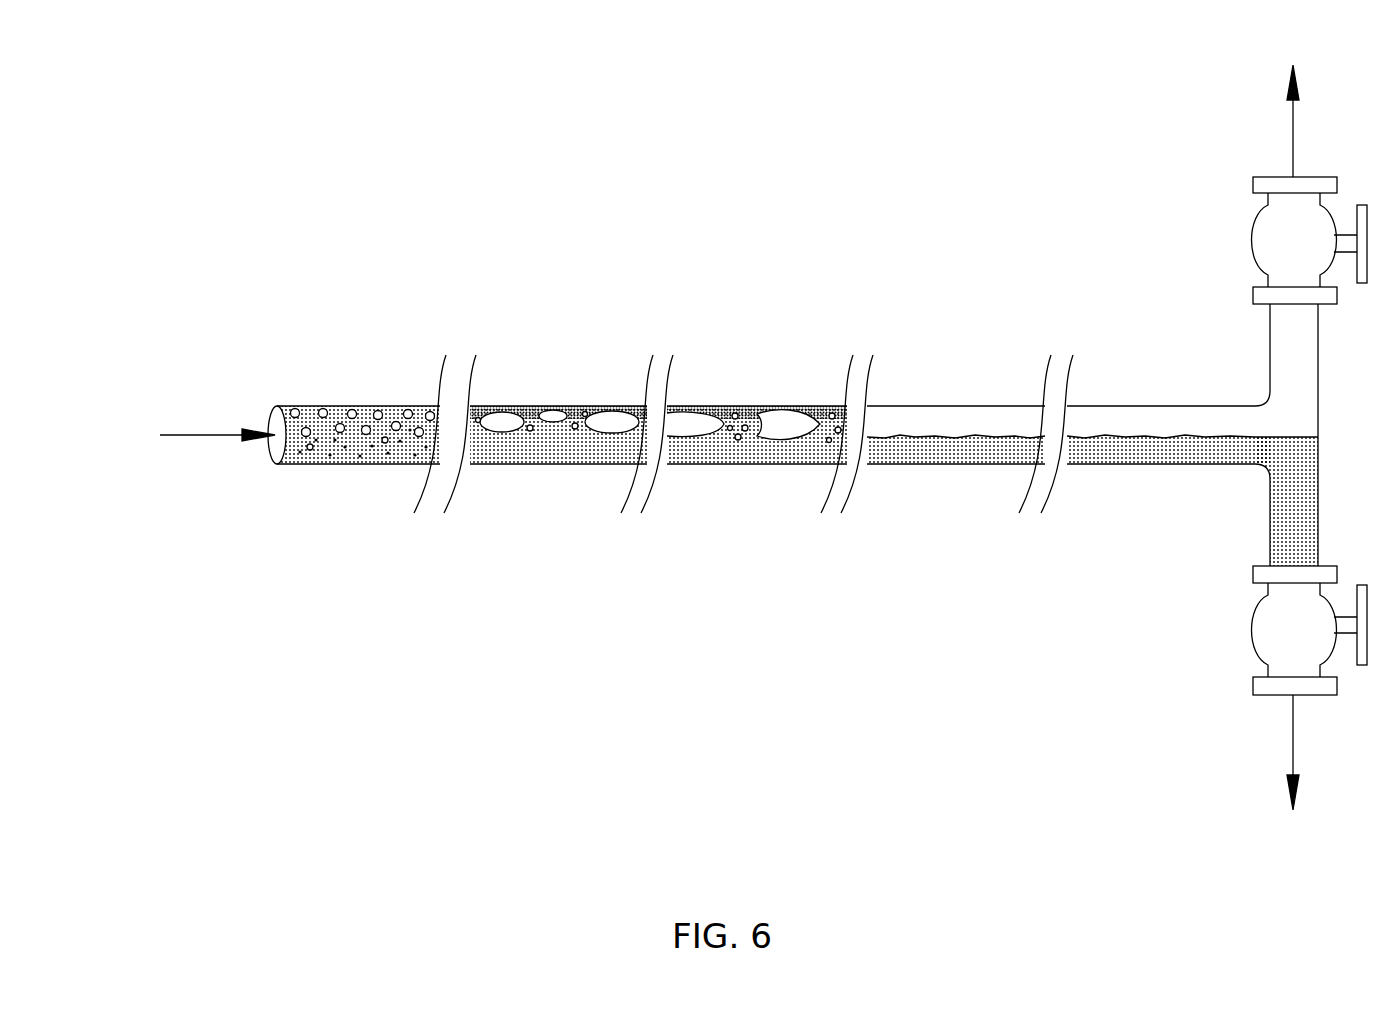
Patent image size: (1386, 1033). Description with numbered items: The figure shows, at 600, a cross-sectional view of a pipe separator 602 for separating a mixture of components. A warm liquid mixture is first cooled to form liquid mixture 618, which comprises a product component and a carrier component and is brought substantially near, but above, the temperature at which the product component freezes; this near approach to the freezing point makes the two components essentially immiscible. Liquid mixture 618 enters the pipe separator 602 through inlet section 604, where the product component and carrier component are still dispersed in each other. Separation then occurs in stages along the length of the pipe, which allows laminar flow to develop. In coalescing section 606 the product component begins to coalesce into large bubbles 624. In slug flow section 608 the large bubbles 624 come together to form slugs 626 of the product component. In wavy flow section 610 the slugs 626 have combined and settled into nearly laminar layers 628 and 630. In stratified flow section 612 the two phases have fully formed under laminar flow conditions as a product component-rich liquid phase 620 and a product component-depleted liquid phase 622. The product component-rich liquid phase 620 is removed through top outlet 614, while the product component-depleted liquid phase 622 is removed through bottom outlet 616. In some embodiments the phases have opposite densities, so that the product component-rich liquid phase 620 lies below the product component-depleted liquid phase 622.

The pipe separator cross-sectional view 600 is at (240, 90).
The pipe separator 602 is at (490, 215).
The inlet section 604 is at (283, 405).
The coalescing section 606 is at (532, 405).
The slug flow section 608 is at (771, 405).
The wavy flow section 610 is at (940, 405).
The stratified flow section 612 is at (1185, 405).
The top outlet 614 is at (1256, 226).
The bottom outlet 616 is at (1256, 660).
The liquid mixture 618 is at (188, 435).
The product component-rich liquid phase 620 is at (1110, 418).
The product component-depleted liquid phase 622 is at (1113, 452).
The large bubbles 624 is at (500, 427).
The slugs 626 is at (694, 430).
The nearly laminar layer 628 is at (895, 423).
The nearly laminar layer 630 is at (968, 453).